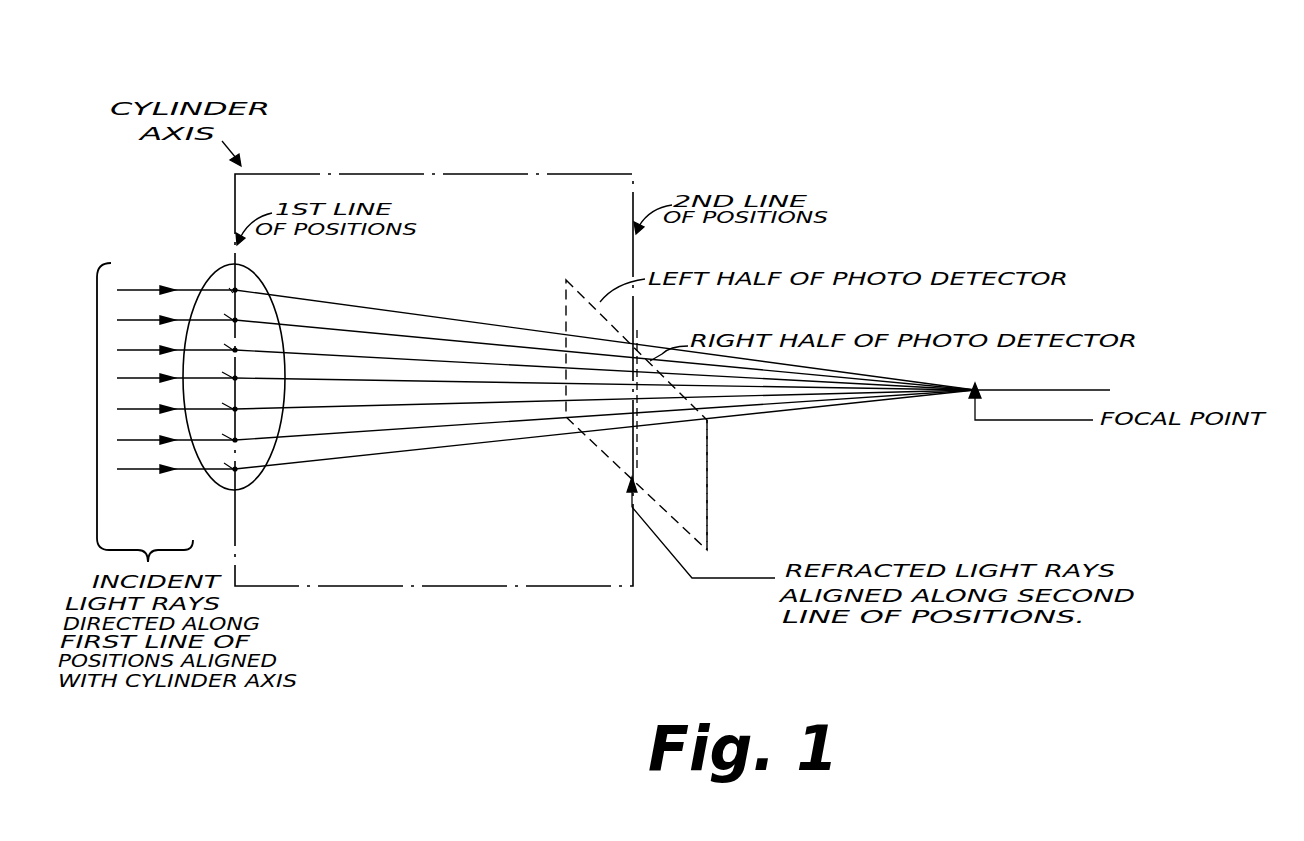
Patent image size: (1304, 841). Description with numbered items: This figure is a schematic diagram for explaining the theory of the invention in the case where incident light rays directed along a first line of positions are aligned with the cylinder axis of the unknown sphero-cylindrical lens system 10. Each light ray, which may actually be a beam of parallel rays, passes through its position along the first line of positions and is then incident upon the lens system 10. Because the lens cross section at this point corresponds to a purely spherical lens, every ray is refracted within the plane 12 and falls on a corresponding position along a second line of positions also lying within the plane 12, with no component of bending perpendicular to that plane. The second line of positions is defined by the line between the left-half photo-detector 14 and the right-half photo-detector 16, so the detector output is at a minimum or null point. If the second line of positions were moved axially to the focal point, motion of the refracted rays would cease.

The sphero-cylindrical lens system 10 is at (251, 484).
The plane 12 is at (540, 181).
The left-half photo-detector 14 is at (566, 289).
The right-half photo-detector 16 is at (688, 508).